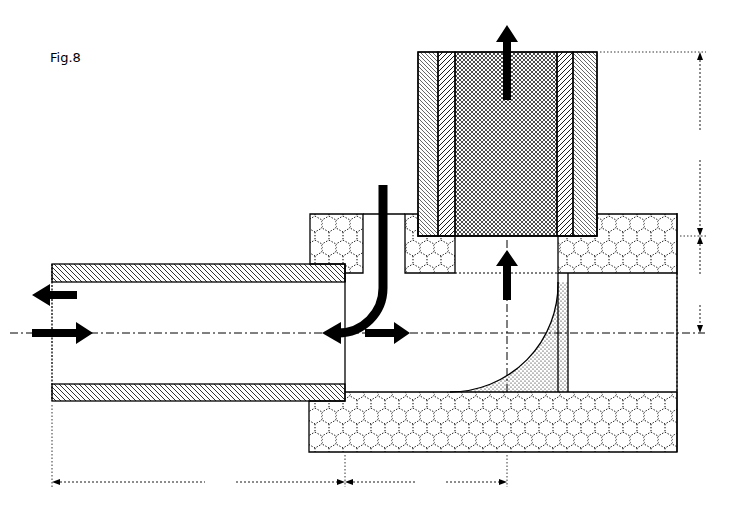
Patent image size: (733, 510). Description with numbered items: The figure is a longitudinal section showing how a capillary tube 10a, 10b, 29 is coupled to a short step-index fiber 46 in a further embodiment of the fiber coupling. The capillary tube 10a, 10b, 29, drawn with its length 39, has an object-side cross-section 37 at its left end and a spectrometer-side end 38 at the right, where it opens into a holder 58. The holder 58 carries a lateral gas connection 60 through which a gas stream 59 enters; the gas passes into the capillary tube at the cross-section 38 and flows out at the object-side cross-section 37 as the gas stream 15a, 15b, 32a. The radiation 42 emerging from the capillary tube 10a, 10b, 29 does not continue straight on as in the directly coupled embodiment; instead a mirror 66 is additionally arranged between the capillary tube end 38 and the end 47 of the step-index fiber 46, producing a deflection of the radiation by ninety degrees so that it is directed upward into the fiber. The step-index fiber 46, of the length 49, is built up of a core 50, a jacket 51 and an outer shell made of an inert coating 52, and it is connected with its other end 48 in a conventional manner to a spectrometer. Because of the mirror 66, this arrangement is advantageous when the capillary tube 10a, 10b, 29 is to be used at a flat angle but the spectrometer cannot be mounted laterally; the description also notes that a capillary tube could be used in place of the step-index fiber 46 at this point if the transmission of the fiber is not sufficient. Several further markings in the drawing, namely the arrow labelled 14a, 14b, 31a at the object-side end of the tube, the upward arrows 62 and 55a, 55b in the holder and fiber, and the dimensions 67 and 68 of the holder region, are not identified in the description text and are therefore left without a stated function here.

The capillary tube 10a is at (90, 264).
The capillary tube 10b is at (198, 323).
The capillary tube 29 is at (198, 323).
The inlet flow 14a is at (100, 327).
The inlet flow 14b is at (126, 328).
The inlet flow 31a is at (126, 328).
The gas stream 15a is at (78, 294).
The gas stream 15b is at (126, 298).
The gas stream 32a is at (126, 298).
The object-side cross-section 37 is at (53, 373).
The spectrometer-side end 38 is at (347, 373).
The length 39 is at (198, 446).
The radiation 42 is at (398, 326).
The step-index fiber 46 is at (507, 133).
The end of the step-index fiber 47 is at (503, 240).
The end of the step-index fiber 48 is at (450, 52).
The length 49 is at (653, 144).
The core 50 is at (527, 52).
The jacket 51 is at (566, 52).
The inert coating 52 is at (587, 50).
The outflow 55a is at (498, 40).
The outflow 55b is at (480, 58).
The holder 58 is at (608, 446).
The gas stream 59 is at (374, 183).
The lateral gas connection 60 is at (367, 213).
The upward flow arrow 62 is at (500, 290).
The mirror 66 is at (517, 364).
The chamber length 67 is at (426, 471).
The chamber height 68 is at (694, 284).